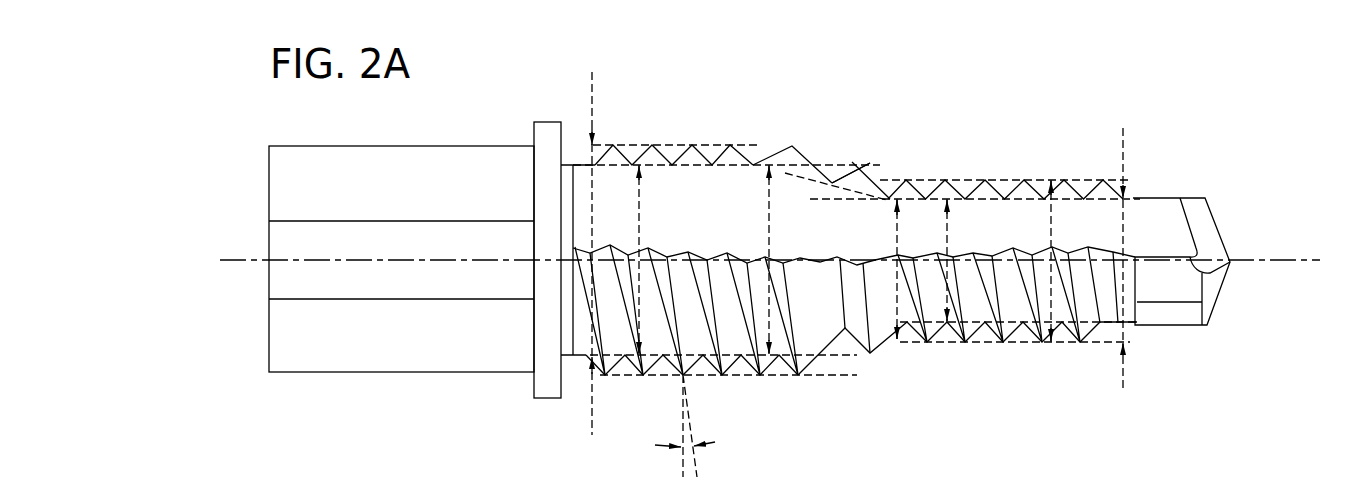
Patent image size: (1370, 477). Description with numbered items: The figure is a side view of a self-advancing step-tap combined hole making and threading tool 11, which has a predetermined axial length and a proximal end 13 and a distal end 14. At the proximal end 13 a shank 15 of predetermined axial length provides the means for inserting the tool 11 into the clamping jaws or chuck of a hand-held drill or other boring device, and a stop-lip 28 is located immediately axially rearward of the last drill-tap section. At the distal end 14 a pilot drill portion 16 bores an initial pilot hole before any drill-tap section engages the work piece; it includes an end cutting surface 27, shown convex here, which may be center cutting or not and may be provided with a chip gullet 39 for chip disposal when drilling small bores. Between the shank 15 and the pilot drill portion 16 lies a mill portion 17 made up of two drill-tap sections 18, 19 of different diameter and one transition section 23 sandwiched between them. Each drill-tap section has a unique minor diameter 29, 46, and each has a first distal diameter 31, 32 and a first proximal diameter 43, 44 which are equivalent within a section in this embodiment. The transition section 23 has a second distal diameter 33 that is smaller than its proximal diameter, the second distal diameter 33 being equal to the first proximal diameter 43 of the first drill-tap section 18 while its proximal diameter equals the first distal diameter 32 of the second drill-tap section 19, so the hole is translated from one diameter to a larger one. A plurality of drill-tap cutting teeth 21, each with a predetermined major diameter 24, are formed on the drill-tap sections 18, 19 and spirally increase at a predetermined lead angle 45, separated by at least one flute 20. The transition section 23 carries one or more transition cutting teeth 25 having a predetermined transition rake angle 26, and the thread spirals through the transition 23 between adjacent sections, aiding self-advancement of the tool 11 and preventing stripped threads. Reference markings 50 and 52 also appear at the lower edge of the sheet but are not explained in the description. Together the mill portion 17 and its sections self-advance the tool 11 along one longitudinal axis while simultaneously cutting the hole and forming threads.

The combined hole making and threading tool 11 is at (753, 100).
The proximal end 13 is at (267, 185).
The distal end 14 is at (1242, 235).
The shank 15 is at (377, 343).
The pilot drill portion 16 is at (1168, 283).
The mill portion 17 is at (908, 133).
The first drill-tap section 18 is at (993, 313).
The second drill-tap section 19 is at (765, 363).
The flute 20 is at (720, 148).
The drill-tap cutting teeth 21 is at (651, 145).
The transition section 23 is at (815, 322).
The major diameter 24 is at (1052, 228).
The transition cutting teeth 25 is at (853, 188).
The transition rake angle 26 is at (873, 188).
The end cutting surface 27 is at (1222, 225).
The stop-lip 28 is at (546, 123).
The minor diameter of first drill-tap section 29 is at (948, 229).
The first distal diameter of first drill-tap section 31 is at (1122, 128).
The first distal diameter of second drill-tap section 32 is at (769, 229).
The second distal diameter 33 is at (897, 232).
The chip gullet 39 is at (1190, 198).
The first proximal diameter of first drill-tap section 43 is at (851, 202).
The first proximal diameter of second drill-tap section 44 is at (591, 96).
The lead angle 45 is at (683, 466).
The minor diameter of second drill-tap section 46 is at (642, 193).
The tip cutting edge 50 is at (1090, 470).
The tip flute 52 is at (1173, 470).